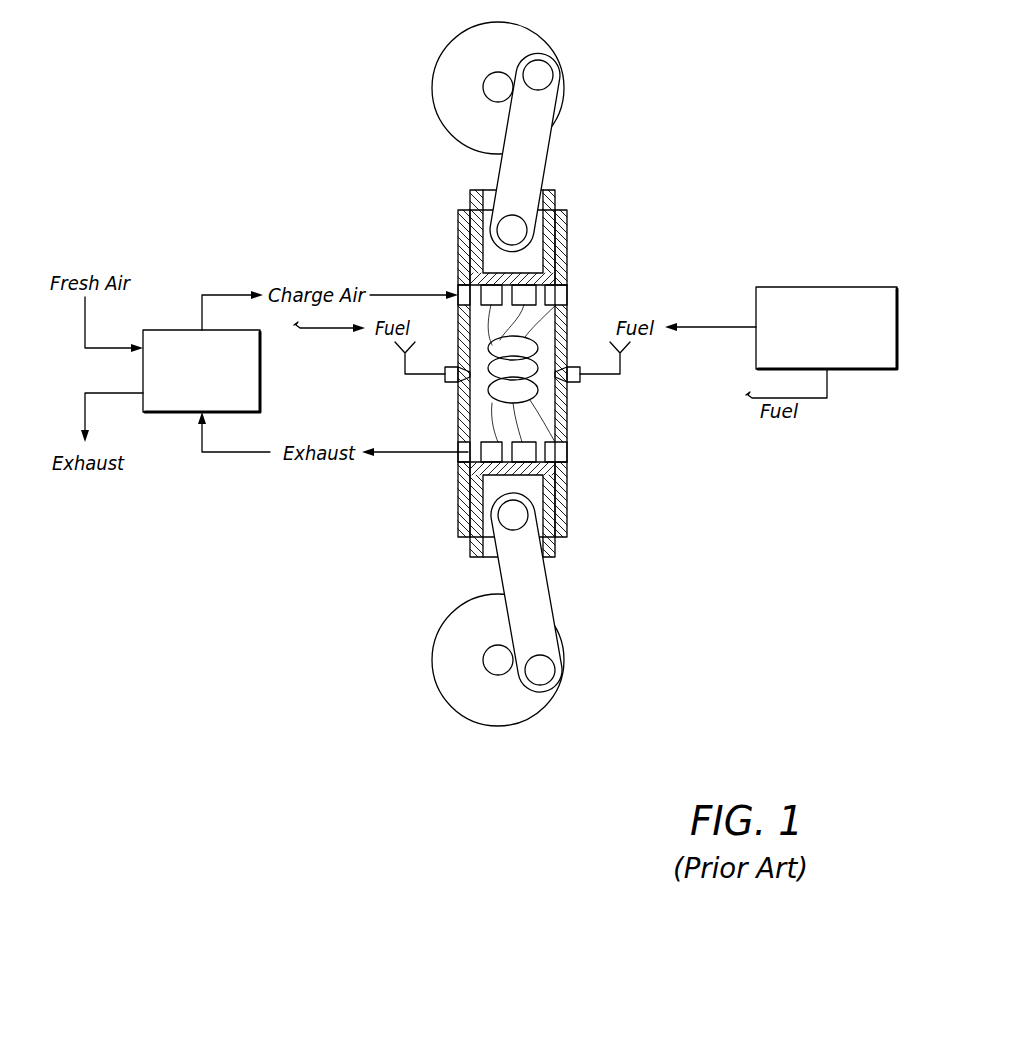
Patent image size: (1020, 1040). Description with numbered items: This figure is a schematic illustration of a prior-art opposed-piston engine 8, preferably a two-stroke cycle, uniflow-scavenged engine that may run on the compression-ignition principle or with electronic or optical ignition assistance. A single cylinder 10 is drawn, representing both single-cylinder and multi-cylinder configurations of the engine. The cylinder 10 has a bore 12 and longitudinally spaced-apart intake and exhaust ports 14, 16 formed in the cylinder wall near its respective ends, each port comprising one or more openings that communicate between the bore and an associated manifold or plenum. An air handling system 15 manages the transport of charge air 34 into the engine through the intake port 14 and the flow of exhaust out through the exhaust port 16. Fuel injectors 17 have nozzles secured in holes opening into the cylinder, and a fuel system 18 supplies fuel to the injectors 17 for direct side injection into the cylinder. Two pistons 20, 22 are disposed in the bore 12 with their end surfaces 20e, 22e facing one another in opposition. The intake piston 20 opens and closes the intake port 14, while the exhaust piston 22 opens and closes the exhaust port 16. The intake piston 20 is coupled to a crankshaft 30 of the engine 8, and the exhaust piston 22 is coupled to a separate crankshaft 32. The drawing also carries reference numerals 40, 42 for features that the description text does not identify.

The opposed-piston engine 8 is at (305, 148).
The cylinder 10 is at (458, 520).
The bore 12 is at (470, 410).
The intake port 14 is at (567, 295).
The air handling system 15 is at (163, 412).
The exhaust port 16 is at (567, 452).
The fuel injectors 17 is at (450, 367).
The fuel system 18 is at (833, 287).
The intake piston 20 is at (460, 205).
The end surface of intake piston 20e is at (488, 292).
The exhaust piston 22 is at (557, 555).
The end surface of exhaust piston 22e is at (487, 450).
The crankshaft 30 is at (440, 57).
The crankshaft 32 is at (458, 712).
The charge air 34 is at (538, 342).
The connecting rod 40 is at (560, 158).
The wrist pin 42 is at (515, 227).